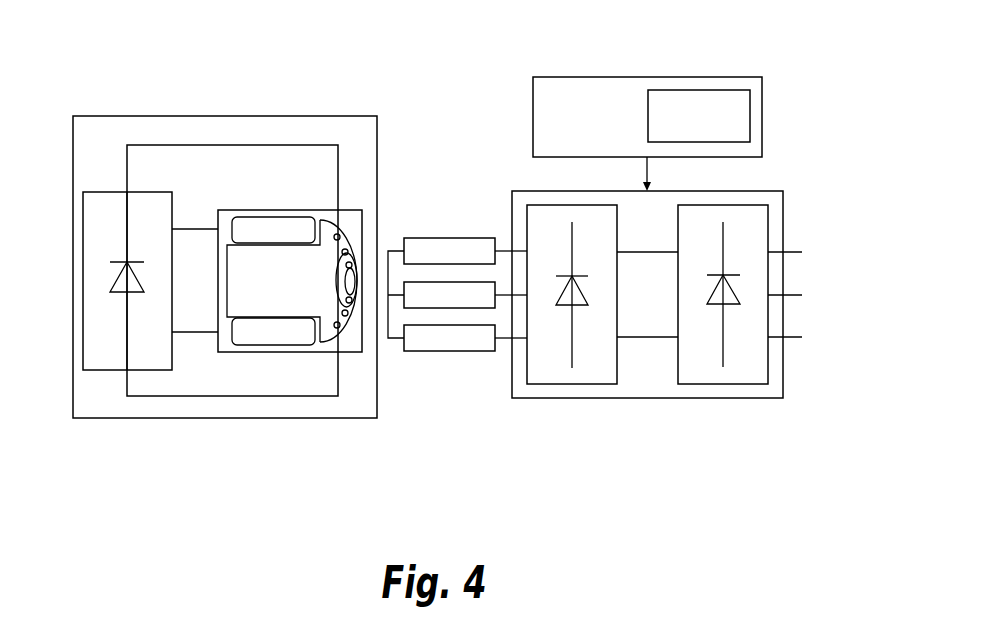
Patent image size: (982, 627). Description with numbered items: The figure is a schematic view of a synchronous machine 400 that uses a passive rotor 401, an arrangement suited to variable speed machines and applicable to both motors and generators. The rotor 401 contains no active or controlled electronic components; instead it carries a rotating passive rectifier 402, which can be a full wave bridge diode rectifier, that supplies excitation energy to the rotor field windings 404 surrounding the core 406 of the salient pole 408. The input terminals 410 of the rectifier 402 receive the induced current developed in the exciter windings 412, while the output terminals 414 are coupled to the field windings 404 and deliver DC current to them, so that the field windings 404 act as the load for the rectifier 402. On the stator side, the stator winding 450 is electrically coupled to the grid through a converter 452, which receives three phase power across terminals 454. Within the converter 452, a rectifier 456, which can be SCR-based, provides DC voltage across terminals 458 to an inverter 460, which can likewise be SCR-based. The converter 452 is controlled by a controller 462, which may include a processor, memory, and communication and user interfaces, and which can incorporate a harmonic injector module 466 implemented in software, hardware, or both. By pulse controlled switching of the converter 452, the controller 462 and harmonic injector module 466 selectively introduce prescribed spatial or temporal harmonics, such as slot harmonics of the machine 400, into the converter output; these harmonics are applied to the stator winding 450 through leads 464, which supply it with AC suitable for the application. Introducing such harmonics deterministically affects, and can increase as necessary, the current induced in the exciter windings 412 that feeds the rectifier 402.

The synchronous machine 400 is at (378, 460).
The passive rotor 401 is at (191, 116).
The rotating passive rectifier 402 is at (95, 218).
The rotor field windings 404 is at (301, 228).
The core 406 is at (249, 280).
The salient pole 408 is at (281, 287).
The input terminals 410 is at (180, 146).
The exciter windings 412 is at (348, 246).
The output terminals 414 is at (186, 229).
The stator winding 450 is at (445, 238).
The converter 452 is at (712, 399).
The terminals 454 is at (807, 307).
The rectifier 456 is at (744, 192).
The terminals 458 is at (655, 358).
The inverter 460 is at (558, 385).
The controller 462 is at (562, 77).
The leads 464 is at (504, 356).
The harmonic injector module 466 is at (754, 110).